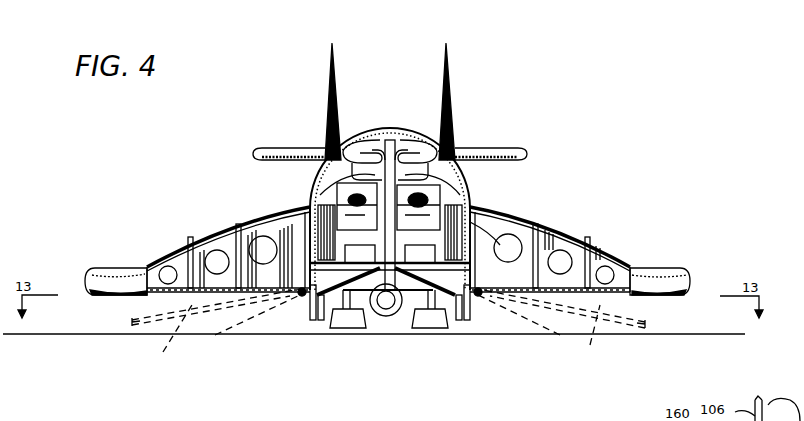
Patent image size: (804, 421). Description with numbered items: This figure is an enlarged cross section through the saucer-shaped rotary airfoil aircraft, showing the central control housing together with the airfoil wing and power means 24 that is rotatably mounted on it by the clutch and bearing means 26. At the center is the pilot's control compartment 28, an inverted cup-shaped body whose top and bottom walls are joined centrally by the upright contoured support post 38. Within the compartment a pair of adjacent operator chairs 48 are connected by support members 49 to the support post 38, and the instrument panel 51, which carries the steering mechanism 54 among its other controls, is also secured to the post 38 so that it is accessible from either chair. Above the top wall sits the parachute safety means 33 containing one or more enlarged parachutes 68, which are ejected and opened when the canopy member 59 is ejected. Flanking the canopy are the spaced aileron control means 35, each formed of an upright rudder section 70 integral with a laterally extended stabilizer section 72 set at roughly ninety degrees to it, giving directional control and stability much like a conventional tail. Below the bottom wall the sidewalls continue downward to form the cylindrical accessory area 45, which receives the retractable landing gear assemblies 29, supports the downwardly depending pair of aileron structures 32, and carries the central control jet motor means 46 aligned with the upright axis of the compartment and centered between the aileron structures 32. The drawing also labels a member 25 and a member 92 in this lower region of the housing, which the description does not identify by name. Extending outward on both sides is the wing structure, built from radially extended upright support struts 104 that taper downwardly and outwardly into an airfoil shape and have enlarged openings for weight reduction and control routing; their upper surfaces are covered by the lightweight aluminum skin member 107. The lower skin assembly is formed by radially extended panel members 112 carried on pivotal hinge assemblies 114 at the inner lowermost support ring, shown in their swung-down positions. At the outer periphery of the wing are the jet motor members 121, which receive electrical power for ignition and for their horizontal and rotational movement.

The airfoil wing and power means 24 is at (222, 240).
The support post 25 is at (470, 318).
The clutch and bearing means 26 is at (287, 233).
The pilot's control compartment 28 is at (447, 227).
The retractable landing gear assemblies 29 is at (343, 318).
The aileron structures 32 is at (384, 316).
The parachute safety means 33 is at (368, 135).
The aileron control means 35 is at (415, 86).
The upright contoured support post 38 is at (418, 150).
The accessory area 45 is at (300, 288).
The central control jet motor means 46 is at (378, 316).
The operator chairs 48 is at (337, 193).
The support members 49 is at (483, 227).
The instrument panel 51 is at (373, 173).
The steering mechanism 54 is at (438, 190).
The canopy member 59 is at (445, 135).
The parachutes 68 is at (405, 135).
The upright rudder sections 70 is at (337, 90).
The stabilizer sections 72 is at (300, 152).
The pivot 92 is at (300, 300).
The support struts 104 is at (160, 203).
The skin member 107 is at (558, 236).
The panel members 112 is at (170, 345).
The pivotal hinge assemblies 114 is at (478, 305).
The jet motor members 121 is at (115, 268).